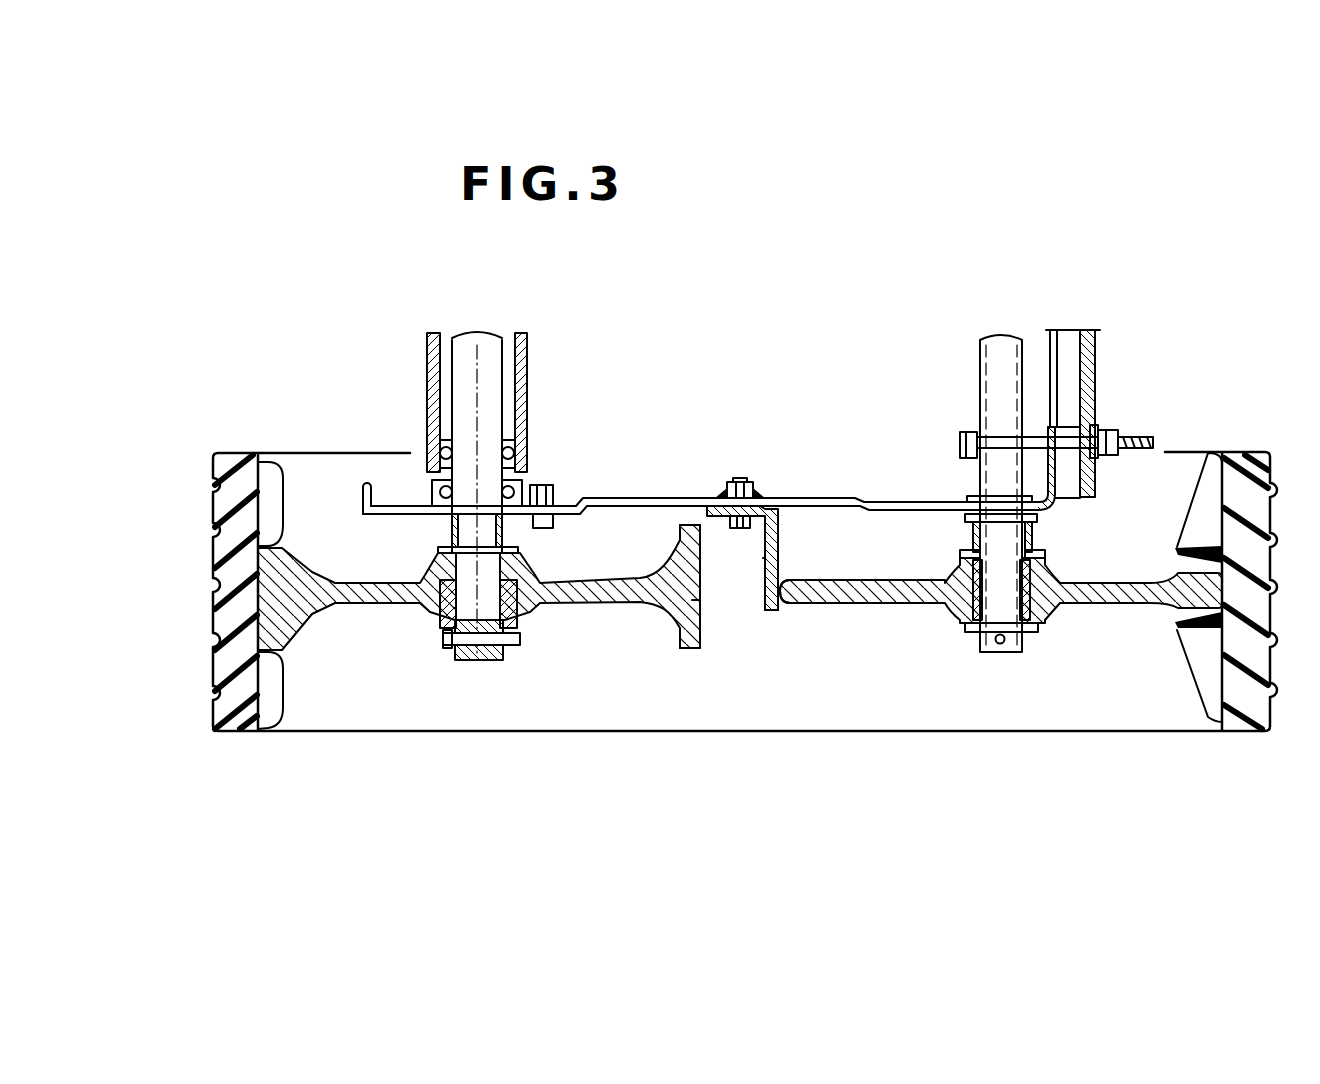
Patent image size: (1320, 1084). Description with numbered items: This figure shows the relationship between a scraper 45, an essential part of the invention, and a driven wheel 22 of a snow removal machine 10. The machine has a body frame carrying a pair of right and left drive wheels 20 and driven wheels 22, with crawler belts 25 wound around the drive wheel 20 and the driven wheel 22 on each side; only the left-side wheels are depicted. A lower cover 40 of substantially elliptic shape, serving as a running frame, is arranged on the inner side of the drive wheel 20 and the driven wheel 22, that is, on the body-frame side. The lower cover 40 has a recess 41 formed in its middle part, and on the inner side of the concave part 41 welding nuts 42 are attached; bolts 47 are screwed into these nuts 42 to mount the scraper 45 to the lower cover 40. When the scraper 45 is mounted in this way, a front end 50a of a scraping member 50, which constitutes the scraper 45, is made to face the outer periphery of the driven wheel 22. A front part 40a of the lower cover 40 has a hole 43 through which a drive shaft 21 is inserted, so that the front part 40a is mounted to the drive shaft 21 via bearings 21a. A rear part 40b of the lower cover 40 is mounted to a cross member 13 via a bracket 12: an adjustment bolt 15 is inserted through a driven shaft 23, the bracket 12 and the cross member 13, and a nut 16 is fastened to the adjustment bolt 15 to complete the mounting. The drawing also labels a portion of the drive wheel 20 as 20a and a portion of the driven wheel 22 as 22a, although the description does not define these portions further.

The snow removal machine 10 is at (1073, 222).
The bracket 12 is at (1068, 508).
The cross member 13 is at (1097, 355).
The adjustment bolt 15 is at (1135, 437).
The nut 16 is at (1105, 428).
The drive wheel 20 is at (691, 583).
The rim portion 20a is at (298, 538).
The drive shaft 21 is at (470, 453).
The bearings 21a is at (540, 485).
The driven wheel 22 is at (1001, 601).
The end portion 22a is at (787, 580).
The driven shaft 23 is at (978, 368).
The crawler belt 25 is at (213, 615).
The lower cover 40 is at (684, 388).
The front part of the lower cover 40a is at (400, 497).
The rear part of the lower cover 40b is at (1040, 495).
The recess 41 is at (672, 524).
The welding nuts 42 is at (750, 480).
The hole 43 is at (453, 516).
The scraper 45 is at (757, 572).
The bolts 47 is at (692, 600).
The scraping member 50 is at (767, 677).
The front end of the scraping member 50a is at (778, 580).